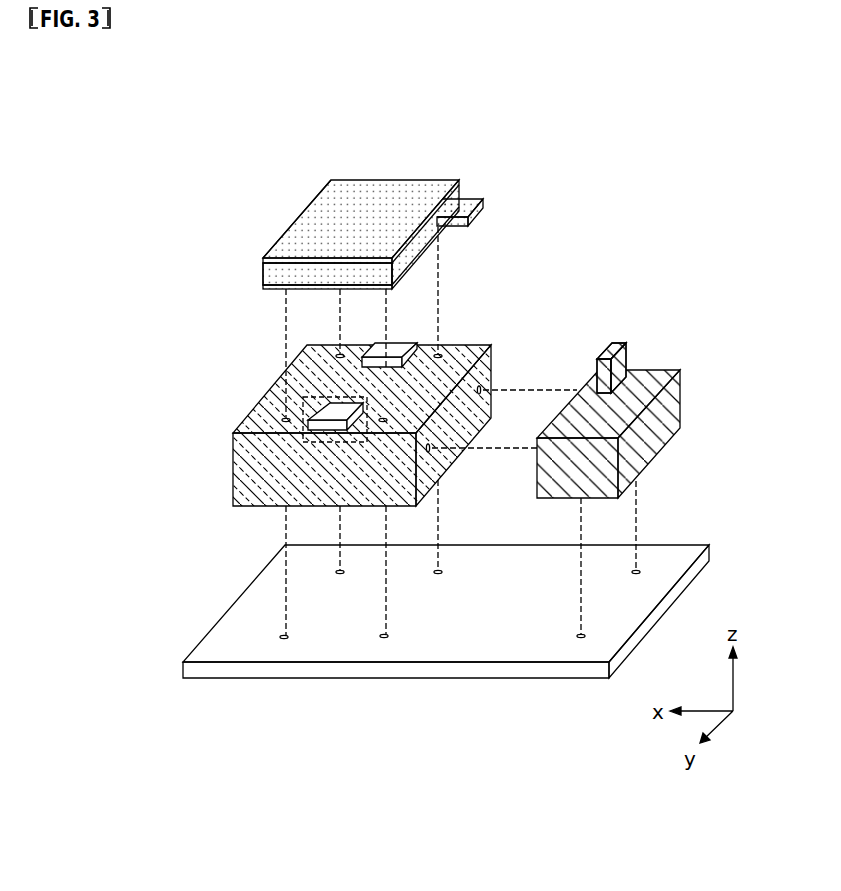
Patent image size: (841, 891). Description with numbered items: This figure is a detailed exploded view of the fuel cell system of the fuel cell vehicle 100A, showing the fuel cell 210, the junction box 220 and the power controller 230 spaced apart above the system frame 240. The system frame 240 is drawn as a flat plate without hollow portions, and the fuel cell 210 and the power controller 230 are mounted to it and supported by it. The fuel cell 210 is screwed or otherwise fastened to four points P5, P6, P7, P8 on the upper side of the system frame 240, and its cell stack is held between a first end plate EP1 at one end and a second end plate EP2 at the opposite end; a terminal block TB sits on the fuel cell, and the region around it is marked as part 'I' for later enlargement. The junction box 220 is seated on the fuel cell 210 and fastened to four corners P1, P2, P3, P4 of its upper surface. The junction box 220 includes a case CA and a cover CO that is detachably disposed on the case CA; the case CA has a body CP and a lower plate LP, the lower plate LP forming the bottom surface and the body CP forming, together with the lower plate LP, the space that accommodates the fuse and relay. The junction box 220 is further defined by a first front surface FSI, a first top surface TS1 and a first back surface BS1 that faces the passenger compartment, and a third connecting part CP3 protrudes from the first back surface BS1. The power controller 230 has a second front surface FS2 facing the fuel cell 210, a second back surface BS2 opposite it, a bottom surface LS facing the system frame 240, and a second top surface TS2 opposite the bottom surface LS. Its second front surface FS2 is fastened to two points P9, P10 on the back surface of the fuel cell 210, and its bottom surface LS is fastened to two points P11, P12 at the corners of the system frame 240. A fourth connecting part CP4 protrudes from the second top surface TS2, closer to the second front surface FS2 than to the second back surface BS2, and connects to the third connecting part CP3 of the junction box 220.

The fuel cell vehicle 100A is at (660, 153).
The junction box 220 is at (158, 216).
The third connecting part CP3 is at (460, 212).
The cover CO is at (262, 263).
The case CA is at (207, 274).
The body CP is at (272, 275).
The lower plate LP is at (263, 290).
The first front surface FSI is at (319, 193).
The first top surface TS1 is at (390, 187).
The first back surface BS1 is at (430, 242).
The fuel cell 210 is at (360, 424).
The first end plate EP1 is at (273, 493).
The second end plate EP2 is at (465, 345).
The terminal block TB is at (395, 345).
The part 'I' I is at (337, 443).
The first corner fastening point P1 is at (283, 419).
The second corner fastening point P2 is at (341, 355).
The third corner fastening point P3 is at (440, 355).
The fourth corner fastening point P4 is at (386, 420).
The fifth fastening point P5 is at (281, 636).
The sixth fastening point P6 is at (339, 570).
The seventh fastening point P7 is at (437, 570).
The eighth fastening point P8 is at (384, 638).
The ninth fastening point P9 is at (430, 448).
The tenth fastening point P10 is at (481, 390).
The eleventh fastening point P11 is at (581, 638).
The twelfth fastening point P12 is at (637, 570).
The power controller 230 is at (603, 412).
The second front surface FS2 is at (537, 477).
The second top surface TS2 is at (654, 375).
The second back surface BS2 is at (674, 392).
The bottom surface LS is at (646, 472).
The fourth connecting part CP4 is at (619, 341).
The system frame 240 is at (190, 670).